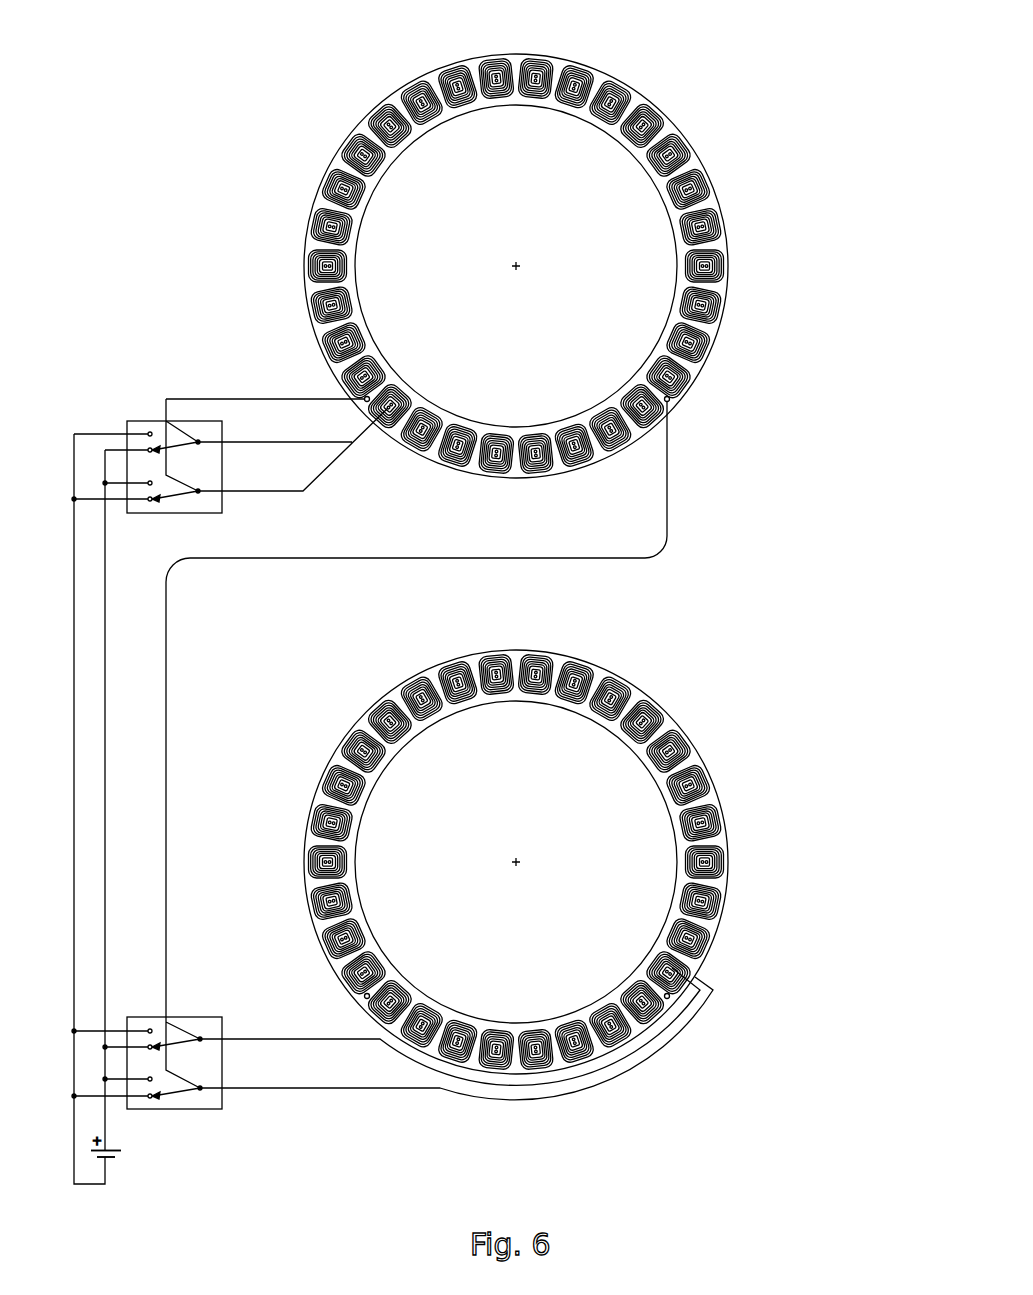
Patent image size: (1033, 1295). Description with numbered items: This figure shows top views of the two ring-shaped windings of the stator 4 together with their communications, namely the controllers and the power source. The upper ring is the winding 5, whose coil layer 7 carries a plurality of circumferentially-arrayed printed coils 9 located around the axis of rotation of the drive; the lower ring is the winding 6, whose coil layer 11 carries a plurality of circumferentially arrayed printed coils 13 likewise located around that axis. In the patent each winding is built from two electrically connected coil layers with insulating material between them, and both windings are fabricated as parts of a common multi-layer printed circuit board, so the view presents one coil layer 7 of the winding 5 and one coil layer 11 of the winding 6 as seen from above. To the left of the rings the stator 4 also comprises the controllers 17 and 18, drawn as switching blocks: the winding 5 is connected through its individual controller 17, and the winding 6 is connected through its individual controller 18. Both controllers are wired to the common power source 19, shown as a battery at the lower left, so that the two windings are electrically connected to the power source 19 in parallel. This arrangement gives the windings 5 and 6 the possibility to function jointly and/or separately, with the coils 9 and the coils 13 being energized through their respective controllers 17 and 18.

The stator 4 is at (208, 183).
The winding 5 is at (564, 255).
The coil layer 7 is at (707, 176).
The printed coils 9 is at (617, 94).
The winding 6 is at (571, 857).
The coil layer 11 is at (708, 774).
The printed coils 13 is at (619, 692).
The controller 17 is at (147, 420).
The controller 18 is at (222, 1105).
The power source 19 is at (122, 1158).